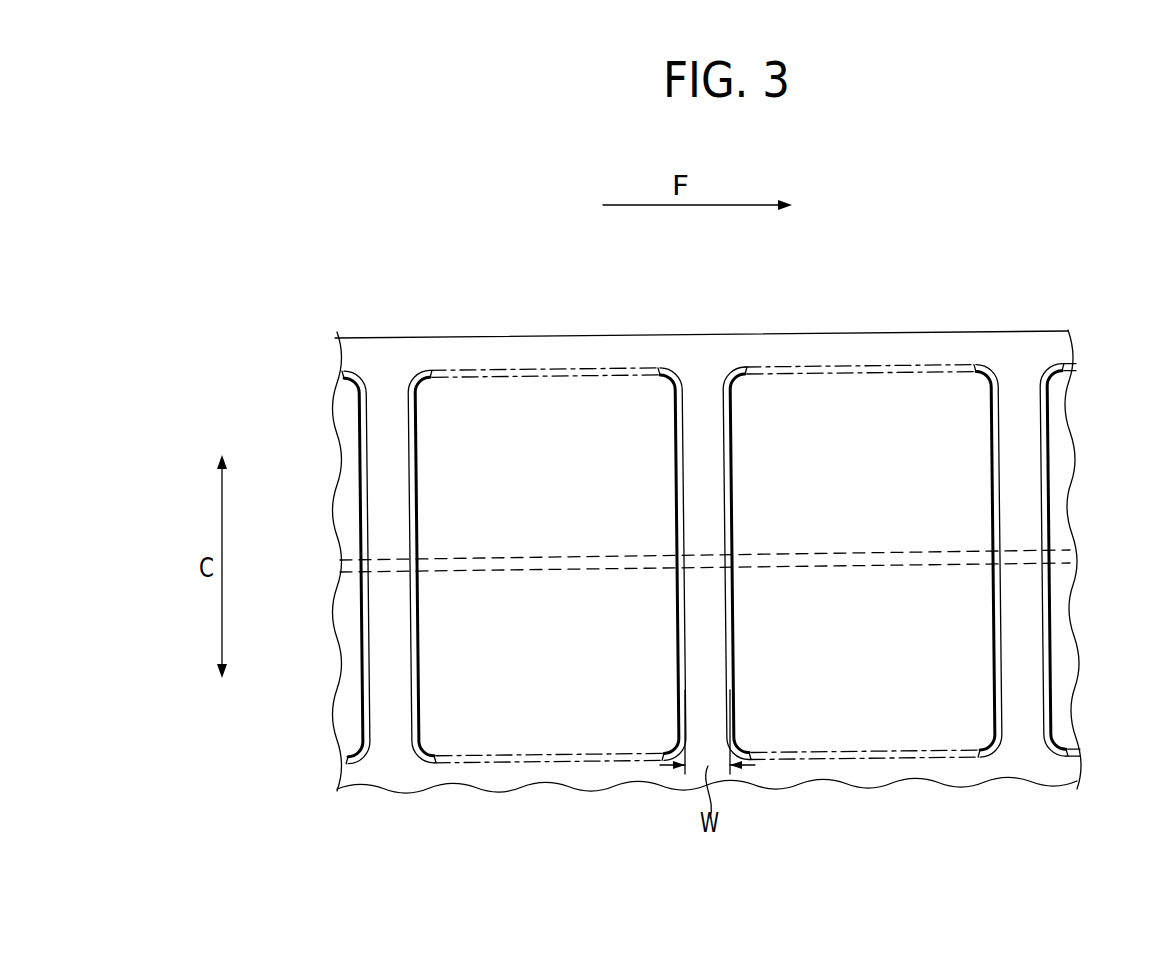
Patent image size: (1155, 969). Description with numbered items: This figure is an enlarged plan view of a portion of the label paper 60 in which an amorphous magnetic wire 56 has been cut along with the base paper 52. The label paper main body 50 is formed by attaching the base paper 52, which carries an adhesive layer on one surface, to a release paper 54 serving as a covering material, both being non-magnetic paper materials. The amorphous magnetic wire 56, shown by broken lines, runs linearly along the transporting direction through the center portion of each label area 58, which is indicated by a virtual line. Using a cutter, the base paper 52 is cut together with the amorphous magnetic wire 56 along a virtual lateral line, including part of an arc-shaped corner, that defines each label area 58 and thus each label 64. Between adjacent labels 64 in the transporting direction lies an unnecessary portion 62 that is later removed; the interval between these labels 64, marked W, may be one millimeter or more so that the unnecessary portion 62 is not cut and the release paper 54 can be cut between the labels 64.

The label paper main body 50 is at (1011, 326).
The base paper 52 is at (390, 353).
The release paper 54 is at (352, 561).
The amorphous magnetic wire 56 is at (1063, 550).
The label area 58 is at (547, 370).
The label paper 60 is at (943, 306).
The unnecessary portion 62 is at (707, 475).
The label 64 is at (567, 730).